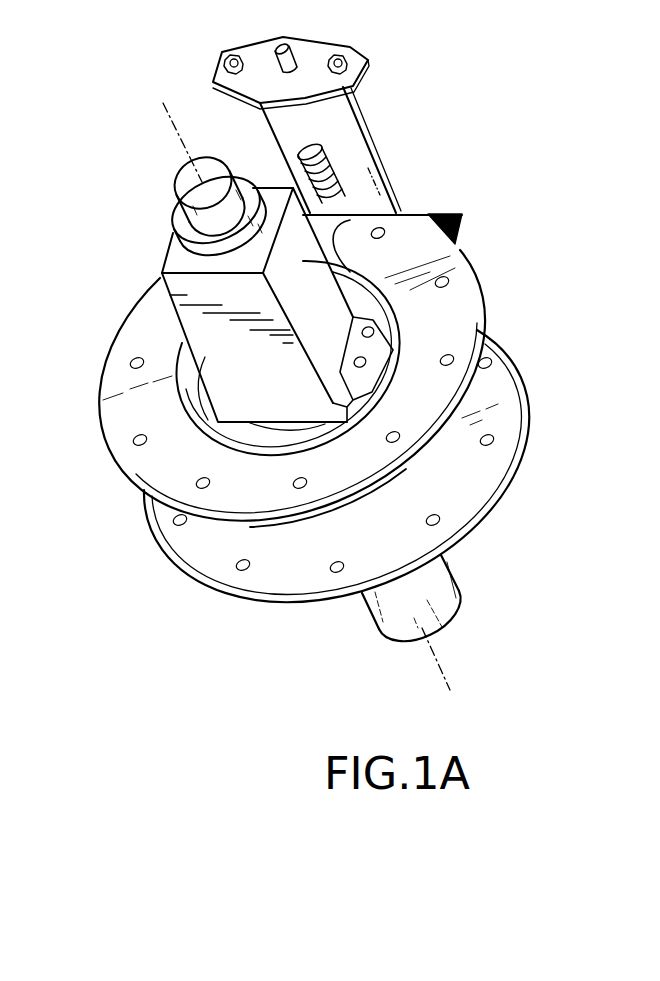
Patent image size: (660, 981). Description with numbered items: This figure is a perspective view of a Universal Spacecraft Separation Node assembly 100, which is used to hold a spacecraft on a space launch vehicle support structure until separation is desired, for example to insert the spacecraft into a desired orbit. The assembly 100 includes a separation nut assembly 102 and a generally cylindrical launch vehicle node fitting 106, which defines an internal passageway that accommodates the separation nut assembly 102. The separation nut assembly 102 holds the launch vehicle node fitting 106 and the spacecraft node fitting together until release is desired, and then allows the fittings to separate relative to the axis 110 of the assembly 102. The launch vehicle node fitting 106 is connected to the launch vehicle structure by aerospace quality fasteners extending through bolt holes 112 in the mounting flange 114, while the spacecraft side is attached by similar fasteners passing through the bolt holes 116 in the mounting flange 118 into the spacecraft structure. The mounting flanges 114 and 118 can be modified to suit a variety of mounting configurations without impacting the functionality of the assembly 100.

The Universal Spacecraft Separation Node assembly 100 is at (366, 363).
The separation nut assembly 102 is at (352, 218).
The launch vehicle node fitting 106 is at (422, 407).
The axis 110 is at (463, 655).
The bolt holes 112 is at (452, 278).
The mounting flange 114 is at (460, 317).
The bolt holes 116 is at (235, 569).
The mounting flange 118 is at (290, 575).